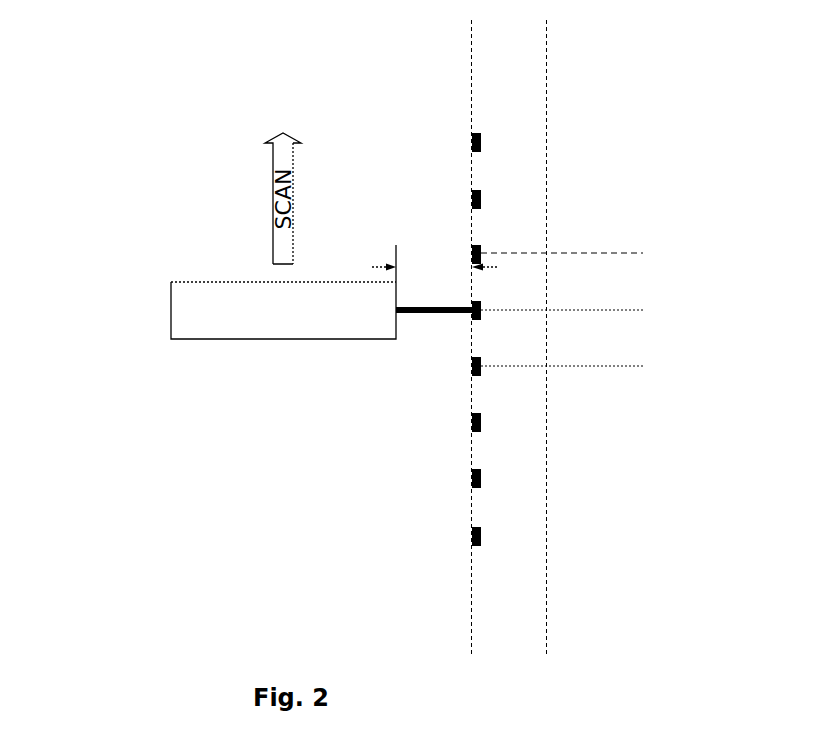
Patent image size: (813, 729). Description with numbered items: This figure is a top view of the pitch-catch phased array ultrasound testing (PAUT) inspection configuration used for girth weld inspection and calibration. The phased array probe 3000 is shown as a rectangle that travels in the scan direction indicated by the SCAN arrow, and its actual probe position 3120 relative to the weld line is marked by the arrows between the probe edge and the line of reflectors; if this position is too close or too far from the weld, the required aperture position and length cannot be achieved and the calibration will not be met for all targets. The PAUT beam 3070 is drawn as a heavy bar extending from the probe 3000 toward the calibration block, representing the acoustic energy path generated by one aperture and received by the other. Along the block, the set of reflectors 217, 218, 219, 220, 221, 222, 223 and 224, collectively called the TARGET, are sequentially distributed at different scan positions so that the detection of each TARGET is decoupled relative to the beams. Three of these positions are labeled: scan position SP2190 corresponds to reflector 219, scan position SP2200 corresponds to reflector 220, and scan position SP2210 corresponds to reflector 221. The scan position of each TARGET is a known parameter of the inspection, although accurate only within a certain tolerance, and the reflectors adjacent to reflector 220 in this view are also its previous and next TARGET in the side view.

The reflector 217 is at (481, 137).
The reflector 218 is at (481, 194).
The reflector 219 is at (481, 249).
The reflector 220 is at (481, 305).
The reflector 221 is at (481, 361).
The reflector 222 is at (481, 417).
The reflector 223 is at (481, 473).
The reflector 224 is at (481, 531).
The phased array probe 3000 is at (171, 302).
The PAUT beam 3070 is at (430, 315).
The probe position 3120 is at (434, 258).
The scan position of reflector 219 SP2190 is at (598, 256).
The scan position of reflector 220 SP2200 is at (598, 312).
The scan position of reflector 221 SP2210 is at (598, 368).